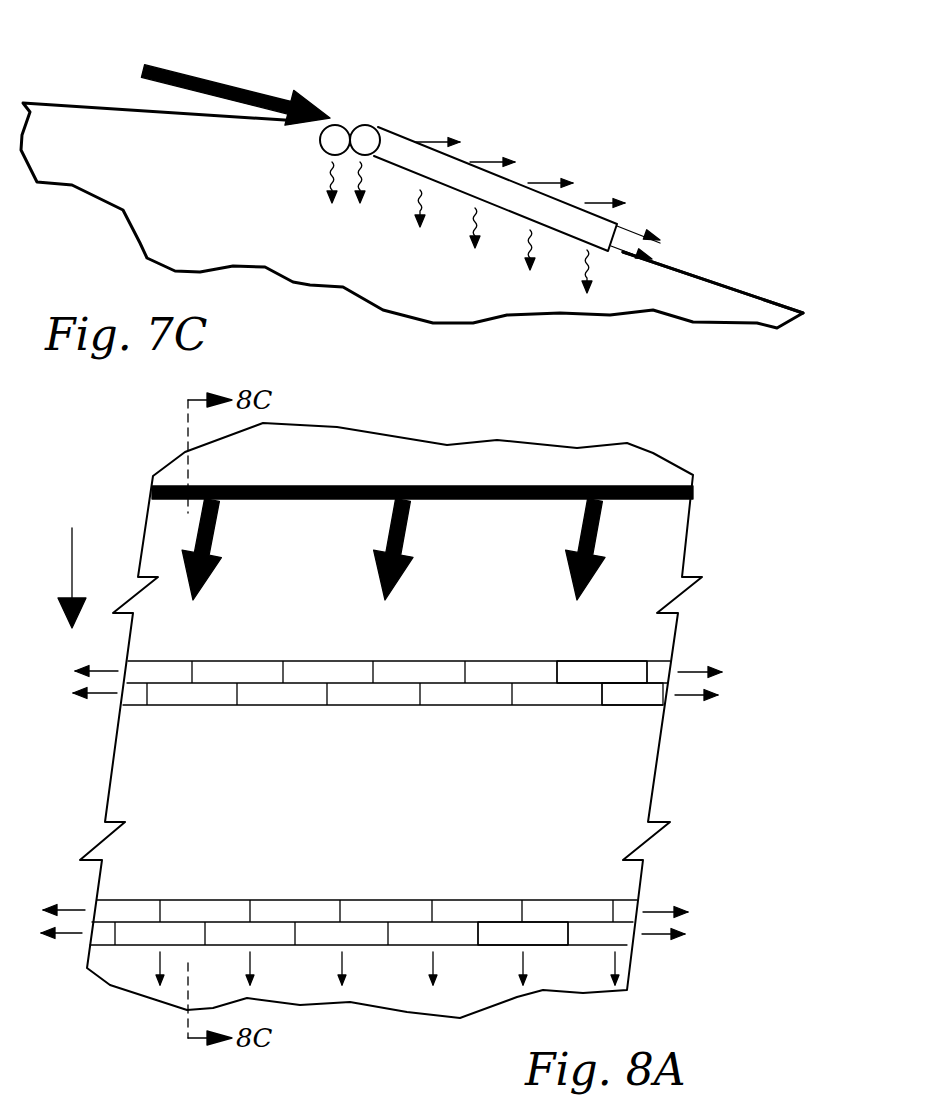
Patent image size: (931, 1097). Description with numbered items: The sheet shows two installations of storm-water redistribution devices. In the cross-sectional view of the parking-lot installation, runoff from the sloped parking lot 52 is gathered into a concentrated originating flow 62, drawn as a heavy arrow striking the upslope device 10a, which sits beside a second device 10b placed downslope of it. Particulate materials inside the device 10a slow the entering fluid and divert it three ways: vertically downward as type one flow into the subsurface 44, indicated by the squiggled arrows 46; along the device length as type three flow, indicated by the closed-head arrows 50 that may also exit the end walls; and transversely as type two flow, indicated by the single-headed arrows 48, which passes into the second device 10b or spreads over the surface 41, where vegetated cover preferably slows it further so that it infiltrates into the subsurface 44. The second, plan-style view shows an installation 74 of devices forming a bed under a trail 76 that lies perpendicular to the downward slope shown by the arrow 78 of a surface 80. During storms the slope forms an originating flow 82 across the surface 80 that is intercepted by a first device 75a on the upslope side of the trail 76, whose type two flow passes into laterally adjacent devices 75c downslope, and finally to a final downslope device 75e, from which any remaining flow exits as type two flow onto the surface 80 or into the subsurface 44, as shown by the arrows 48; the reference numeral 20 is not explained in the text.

In FIG. 7C, the device 10a is at (335, 125).
In FIG. 7C, the second device 10b is at (368, 126).
In FIG. 7C, the surface 41 is at (742, 280).
In FIG. 7C, the subsurface 44 is at (430, 292).
In FIG. 7C, the squiggled arrows 46 is at (530, 238).
In FIG. 7C, the single-headed arrows 48 is at (540, 182).
In FIG. 8A, the single-headed arrows 48 is at (432, 955).
In FIG. 7C, the closed-head arrows 50 is at (633, 233).
In FIG. 8A, the closed-head arrows 50 is at (103, 671).
In FIG. 7C, the parking lot 52 is at (85, 103).
In FIG. 7C, the concentrated originating flow 62 is at (218, 63).
In FIG. 8A, the block 20 is at (283, 673).
In FIG. 8A, the installation 74 is at (765, 548).
In FIG. 8A, the first device 75a is at (580, 660).
In FIG. 8A, the laterally adjacent devices 75c is at (617, 693).
In FIG. 8A, the final downslope device 75e is at (542, 935).
In FIG. 8A, the trail 76 is at (373, 831).
In FIG. 8A, the arrow 78 is at (73, 563).
In FIG. 8A, the surface 80 is at (493, 614).
In FIG. 8A, the originating flow 82 is at (323, 487).